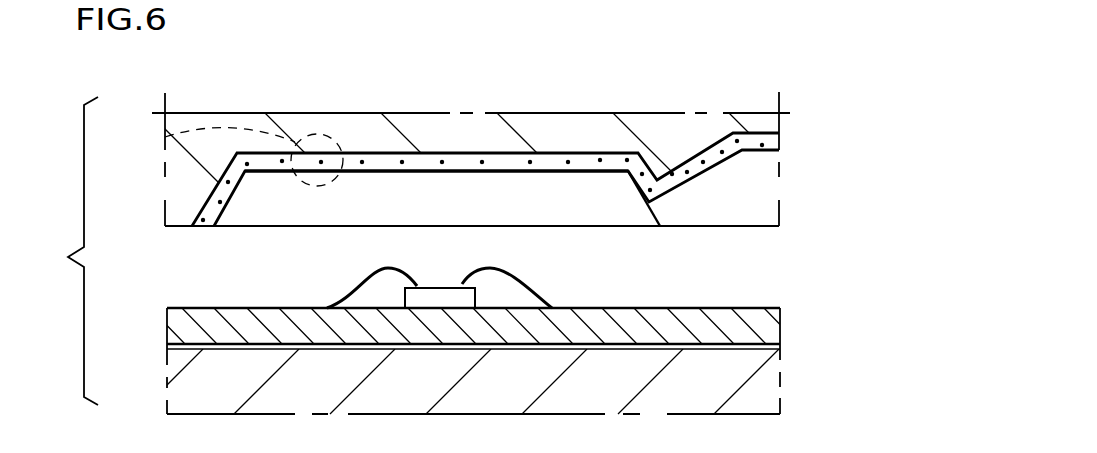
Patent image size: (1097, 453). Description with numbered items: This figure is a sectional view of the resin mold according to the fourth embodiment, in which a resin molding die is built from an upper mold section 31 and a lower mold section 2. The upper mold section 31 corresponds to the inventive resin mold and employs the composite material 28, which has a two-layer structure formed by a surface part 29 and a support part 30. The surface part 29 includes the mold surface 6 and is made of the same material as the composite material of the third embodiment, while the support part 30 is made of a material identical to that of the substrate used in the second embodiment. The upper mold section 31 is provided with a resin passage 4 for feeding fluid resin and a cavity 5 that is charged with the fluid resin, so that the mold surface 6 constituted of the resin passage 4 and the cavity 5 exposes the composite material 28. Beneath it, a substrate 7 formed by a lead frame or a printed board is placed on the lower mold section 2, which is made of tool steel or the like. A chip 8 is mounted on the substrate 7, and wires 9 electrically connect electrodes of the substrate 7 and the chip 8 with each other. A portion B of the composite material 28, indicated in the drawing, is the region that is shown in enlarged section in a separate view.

The lower mold section 2 is at (818, 398).
The resin passage 4 is at (752, 190).
The cavity 5 is at (615, 197).
The mold surface 6 is at (563, 172).
The substrate 7 is at (733, 326).
The chip 8 is at (438, 298).
The wires 9 is at (357, 282).
The composite material 28 is at (485, 113).
The surface part 29 is at (485, 58).
The support part 30 is at (447, 130).
The upper mold section 31 is at (732, 85).
The portion B is at (165, 138).